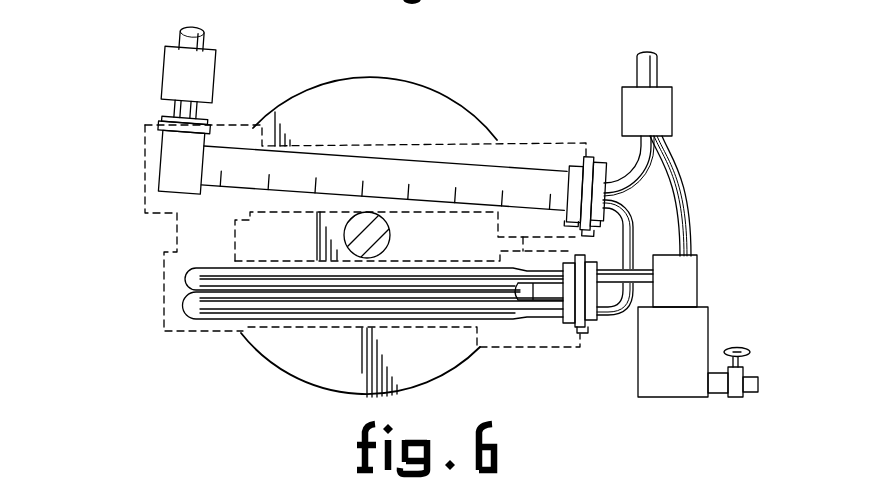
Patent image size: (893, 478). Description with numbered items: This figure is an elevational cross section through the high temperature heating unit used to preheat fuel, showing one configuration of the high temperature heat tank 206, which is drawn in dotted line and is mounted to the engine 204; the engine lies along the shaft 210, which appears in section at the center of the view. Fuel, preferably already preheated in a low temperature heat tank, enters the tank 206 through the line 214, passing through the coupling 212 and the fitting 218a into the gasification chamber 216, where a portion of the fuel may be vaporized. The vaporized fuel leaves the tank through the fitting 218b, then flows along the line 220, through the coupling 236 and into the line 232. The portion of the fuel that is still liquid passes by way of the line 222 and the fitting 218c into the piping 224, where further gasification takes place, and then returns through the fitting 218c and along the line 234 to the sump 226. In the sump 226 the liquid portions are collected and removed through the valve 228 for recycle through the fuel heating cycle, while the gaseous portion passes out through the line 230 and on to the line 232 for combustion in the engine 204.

The engine 204 is at (440, 118).
The high temperature heat tank 206 is at (499, 140).
The shaft 210 is at (392, 234).
The coupling 212 is at (176, 73).
The line 214 is at (186, 36).
The gasification chamber 216 is at (346, 184).
The fitting 218a is at (170, 168).
The fitting 218b is at (587, 152).
The fitting 218c is at (585, 333).
The line 220 is at (648, 158).
The line 222 is at (634, 232).
The piping 224 is at (192, 307).
The sump 226 is at (704, 318).
The valve 228 is at (741, 366).
The line 230 is at (688, 197).
The line 232 is at (657, 67).
The line 234 is at (643, 287).
The coupling 236 is at (667, 107).